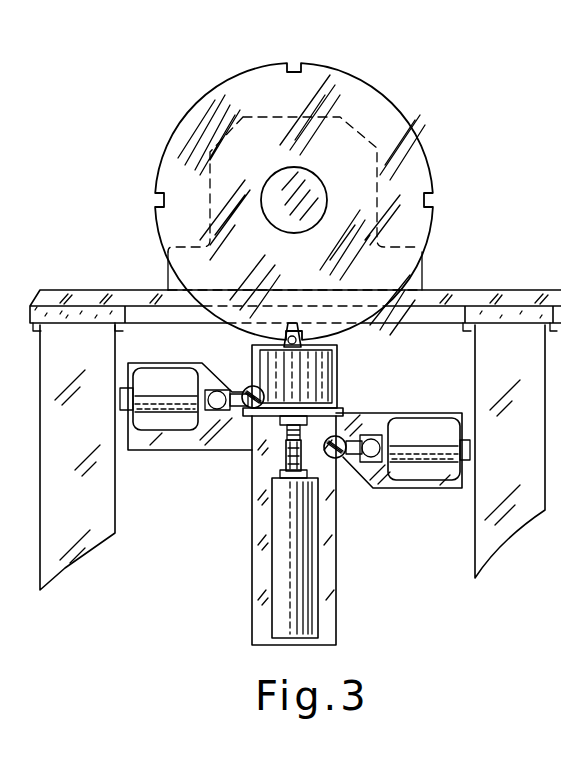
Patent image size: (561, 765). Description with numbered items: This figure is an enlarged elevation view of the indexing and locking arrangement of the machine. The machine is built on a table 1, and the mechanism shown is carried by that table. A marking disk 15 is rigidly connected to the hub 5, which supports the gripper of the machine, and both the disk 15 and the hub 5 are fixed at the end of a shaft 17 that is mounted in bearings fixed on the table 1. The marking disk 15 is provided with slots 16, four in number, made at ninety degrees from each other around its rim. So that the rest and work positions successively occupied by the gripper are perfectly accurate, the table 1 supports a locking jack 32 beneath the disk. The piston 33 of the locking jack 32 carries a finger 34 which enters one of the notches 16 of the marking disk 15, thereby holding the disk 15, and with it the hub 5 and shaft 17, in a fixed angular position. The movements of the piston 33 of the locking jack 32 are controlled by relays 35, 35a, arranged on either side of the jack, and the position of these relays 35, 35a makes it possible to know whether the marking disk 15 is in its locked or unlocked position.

The table 1 is at (478, 303).
The hub 5 is at (272, 448).
The marking disk 15 is at (388, 129).
The slots 16 is at (340, 53).
The shaft 17 is at (318, 223).
The locking jack 32 is at (385, 628).
The piston 33 is at (293, 446).
The finger 34 is at (338, 348).
The relay 35 is at (341, 456).
The relay 35a is at (155, 413).